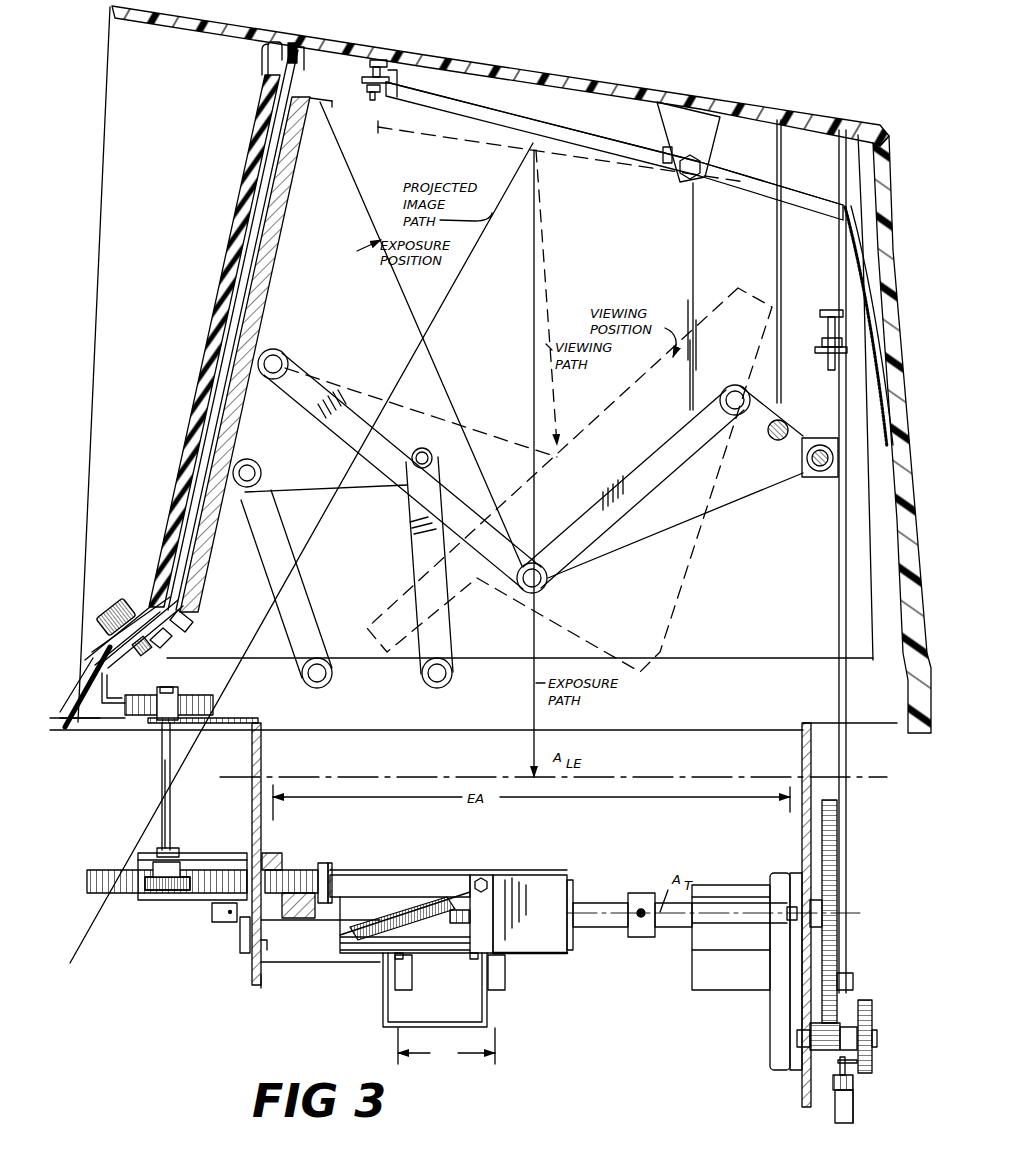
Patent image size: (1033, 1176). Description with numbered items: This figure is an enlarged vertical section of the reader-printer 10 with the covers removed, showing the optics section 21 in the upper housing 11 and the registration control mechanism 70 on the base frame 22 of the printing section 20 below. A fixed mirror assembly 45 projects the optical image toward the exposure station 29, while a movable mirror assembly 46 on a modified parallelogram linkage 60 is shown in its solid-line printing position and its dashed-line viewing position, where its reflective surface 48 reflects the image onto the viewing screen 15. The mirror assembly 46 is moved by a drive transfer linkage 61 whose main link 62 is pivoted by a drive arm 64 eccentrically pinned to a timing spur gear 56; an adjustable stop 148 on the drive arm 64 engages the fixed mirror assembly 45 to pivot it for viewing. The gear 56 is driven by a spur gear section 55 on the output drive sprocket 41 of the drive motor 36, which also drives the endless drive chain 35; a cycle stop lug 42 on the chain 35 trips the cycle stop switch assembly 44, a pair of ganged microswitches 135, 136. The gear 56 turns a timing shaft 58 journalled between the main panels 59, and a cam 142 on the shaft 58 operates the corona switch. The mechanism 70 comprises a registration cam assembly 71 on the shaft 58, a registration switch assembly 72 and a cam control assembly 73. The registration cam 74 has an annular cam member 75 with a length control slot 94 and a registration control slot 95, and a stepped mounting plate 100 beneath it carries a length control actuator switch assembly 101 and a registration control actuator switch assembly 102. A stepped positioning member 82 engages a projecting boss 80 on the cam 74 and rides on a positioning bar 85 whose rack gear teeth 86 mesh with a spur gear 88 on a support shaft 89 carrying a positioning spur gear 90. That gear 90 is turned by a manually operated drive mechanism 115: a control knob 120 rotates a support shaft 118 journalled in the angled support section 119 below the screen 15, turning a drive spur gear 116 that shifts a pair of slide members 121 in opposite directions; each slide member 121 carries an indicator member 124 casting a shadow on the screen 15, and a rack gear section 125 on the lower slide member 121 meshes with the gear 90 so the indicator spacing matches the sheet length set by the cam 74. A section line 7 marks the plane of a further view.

The reader-printer 10 is at (770, 93).
The housing 11 is at (870, 127).
The viewing screen 15 is at (222, 295).
The printing section 20 is at (183, 981).
The optics section 21 is at (568, 103).
The base frame 22 is at (251, 974).
The exposure station 29 is at (396, 776).
The endless drive chain 35 is at (875, 1057).
The drive motor 36 is at (700, 975).
The output drive sprocket 41 is at (872, 1018).
The cycle stop lug 42 is at (840, 1064).
The cycle stop switch assembly 44 is at (834, 1121).
The fixed mirror assembly 45 is at (632, 157).
The movable mirror assembly 46 is at (346, 170).
The reflective surface 48 is at (268, 230).
The spur gear section 55 is at (840, 1025).
The timing spur gear 56 is at (838, 847).
The timing shaft 58 is at (683, 921).
The main panels 59 is at (259, 983).
The modified parallelogram linkage 60 is at (406, 587).
The drive transfer linkage 61 is at (540, 592).
The main link 62 is at (724, 505).
The drive arm 64 is at (840, 541).
The registration control mechanism 70 is at (563, 852).
The registration cam assembly 71 is at (372, 870).
The registration switch assembly 72 is at (386, 1029).
The cam control assembly 73 is at (155, 758).
The registration cam 74 is at (420, 955).
The annular cam member 75 is at (450, 955).
The projecting boss 80 is at (575, 896).
The stepped positioning member 82 is at (550, 950).
The positioning bar 85 is at (418, 879).
The rack gear teeth 86 is at (280, 875).
The spur gear 88 is at (166, 890).
The support shaft 89 is at (171, 824).
The positioning spur gear 90 is at (213, 707).
The length control slot 94 is at (350, 932).
The registration control slot 95 is at (457, 910).
The stepped mounting plate 100 is at (313, 965).
The length control actuator switch assembly 101 is at (403, 989).
The registration control actuator switch assembly 102 is at (500, 992).
The manually operated drive mechanism 115 is at (104, 603).
The drive spur gear 116 is at (138, 648).
The support shaft 118 is at (155, 650).
The angled support section 119 is at (103, 650).
The control knob 120 is at (130, 588).
The slide members 121 is at (175, 622).
The indicator member 124 is at (252, 259).
The rack gear section 125 is at (99, 721).
The microswitch 135 is at (852, 1124).
The microswitch 136 is at (833, 1124).
The cam 142 is at (240, 938).
The adjustable stop 148 is at (829, 312).
The section line 7 is at (232, 613).